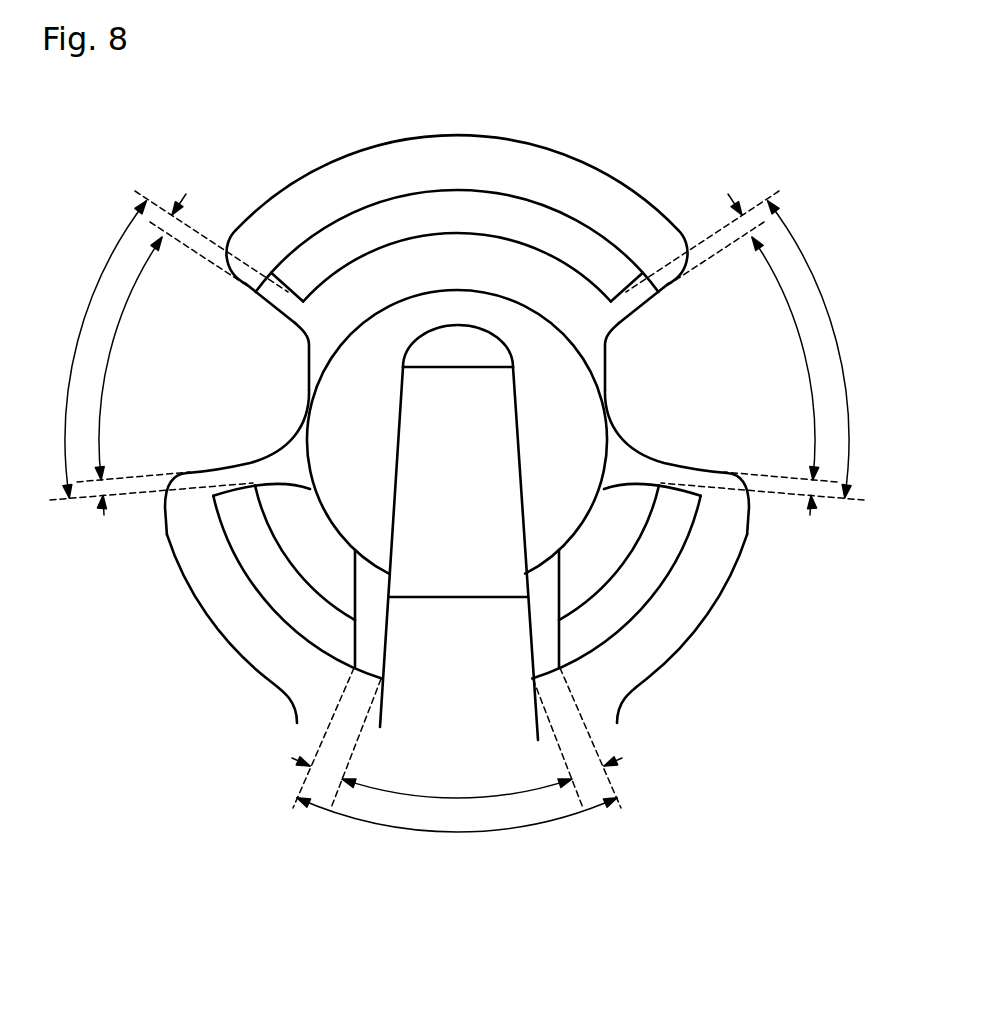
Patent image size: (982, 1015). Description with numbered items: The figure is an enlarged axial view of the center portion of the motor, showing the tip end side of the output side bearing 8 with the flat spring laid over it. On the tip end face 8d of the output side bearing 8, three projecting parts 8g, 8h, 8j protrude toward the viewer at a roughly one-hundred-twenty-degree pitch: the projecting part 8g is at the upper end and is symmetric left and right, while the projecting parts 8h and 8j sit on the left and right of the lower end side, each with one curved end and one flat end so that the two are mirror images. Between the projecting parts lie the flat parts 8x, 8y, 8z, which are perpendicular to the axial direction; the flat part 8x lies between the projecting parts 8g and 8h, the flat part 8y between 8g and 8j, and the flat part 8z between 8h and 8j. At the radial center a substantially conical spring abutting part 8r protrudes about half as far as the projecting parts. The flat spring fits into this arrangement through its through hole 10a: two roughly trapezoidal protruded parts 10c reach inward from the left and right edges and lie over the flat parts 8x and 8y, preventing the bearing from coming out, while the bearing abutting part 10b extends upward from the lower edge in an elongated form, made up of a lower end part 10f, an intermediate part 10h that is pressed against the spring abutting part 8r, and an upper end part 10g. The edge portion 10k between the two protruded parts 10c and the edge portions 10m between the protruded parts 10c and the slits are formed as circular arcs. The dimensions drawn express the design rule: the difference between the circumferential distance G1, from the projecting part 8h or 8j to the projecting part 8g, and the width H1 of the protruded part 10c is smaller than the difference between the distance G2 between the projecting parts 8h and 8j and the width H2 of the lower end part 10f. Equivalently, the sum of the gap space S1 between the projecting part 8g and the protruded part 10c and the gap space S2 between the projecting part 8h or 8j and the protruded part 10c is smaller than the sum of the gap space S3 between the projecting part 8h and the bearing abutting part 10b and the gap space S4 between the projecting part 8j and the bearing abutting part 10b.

The output side bearing 8 is at (583, 220).
The projecting part 8g is at (457, 190).
The tip end face 8d is at (466, 272).
The flat part 8x is at (333, 351).
The flat part 8y is at (600, 351).
The flat part 8z is at (385, 604).
The spring abutting part 8r is at (568, 474).
The projecting part 8h is at (259, 594).
The projecting part 8j is at (655, 594).
The through hole 10a is at (318, 226).
The edge portion 10k is at (365, 153).
The edge portion 10m is at (172, 540).
The protruded part 10c is at (320, 392).
The intermediate part 10h is at (396, 458).
The upper end part 10g is at (513, 364).
The bearing abutting part 10b is at (458, 326).
The lower end part 10f is at (537, 645).
The gap space S1 is at (172, 213).
The gap space S2 is at (103, 495).
The gap space S3 is at (325, 765).
The gap space S4 is at (589, 765).
The distance G1 is at (85, 320).
The distance G2 is at (470, 833).
The width H1 is at (112, 353).
The width H2 is at (457, 797).